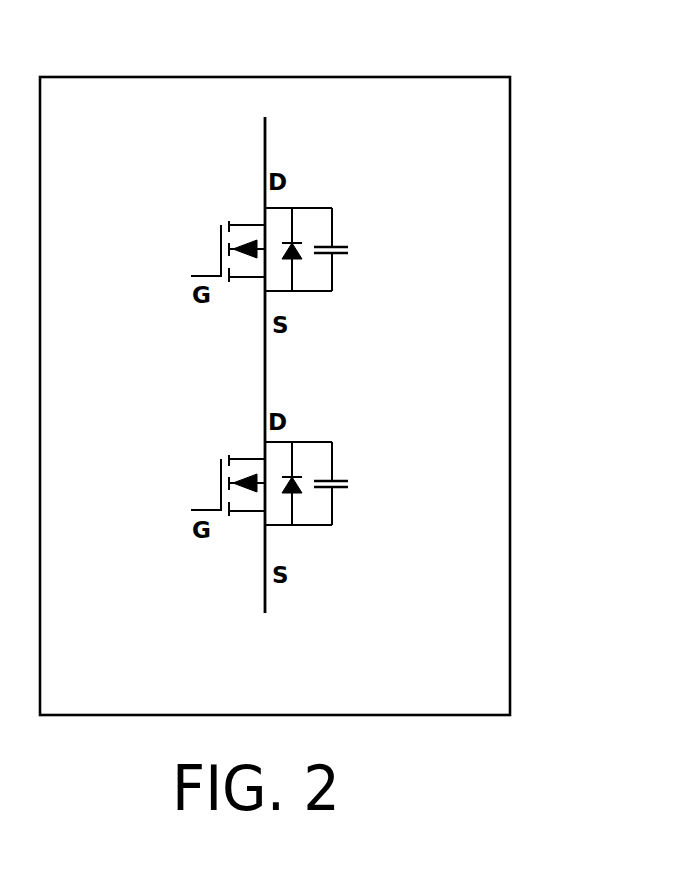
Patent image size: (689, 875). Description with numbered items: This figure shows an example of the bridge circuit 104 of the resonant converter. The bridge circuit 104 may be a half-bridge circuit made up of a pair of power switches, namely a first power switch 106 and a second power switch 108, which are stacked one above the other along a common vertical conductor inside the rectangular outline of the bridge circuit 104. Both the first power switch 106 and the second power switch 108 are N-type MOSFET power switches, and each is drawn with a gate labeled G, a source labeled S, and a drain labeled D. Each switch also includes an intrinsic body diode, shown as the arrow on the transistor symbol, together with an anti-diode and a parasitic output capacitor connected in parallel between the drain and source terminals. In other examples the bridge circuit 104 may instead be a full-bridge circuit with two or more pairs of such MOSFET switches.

The bridge circuit 104 is at (479, 77).
The first power switch 106 is at (220, 238).
The second power switch 108 is at (220, 475).